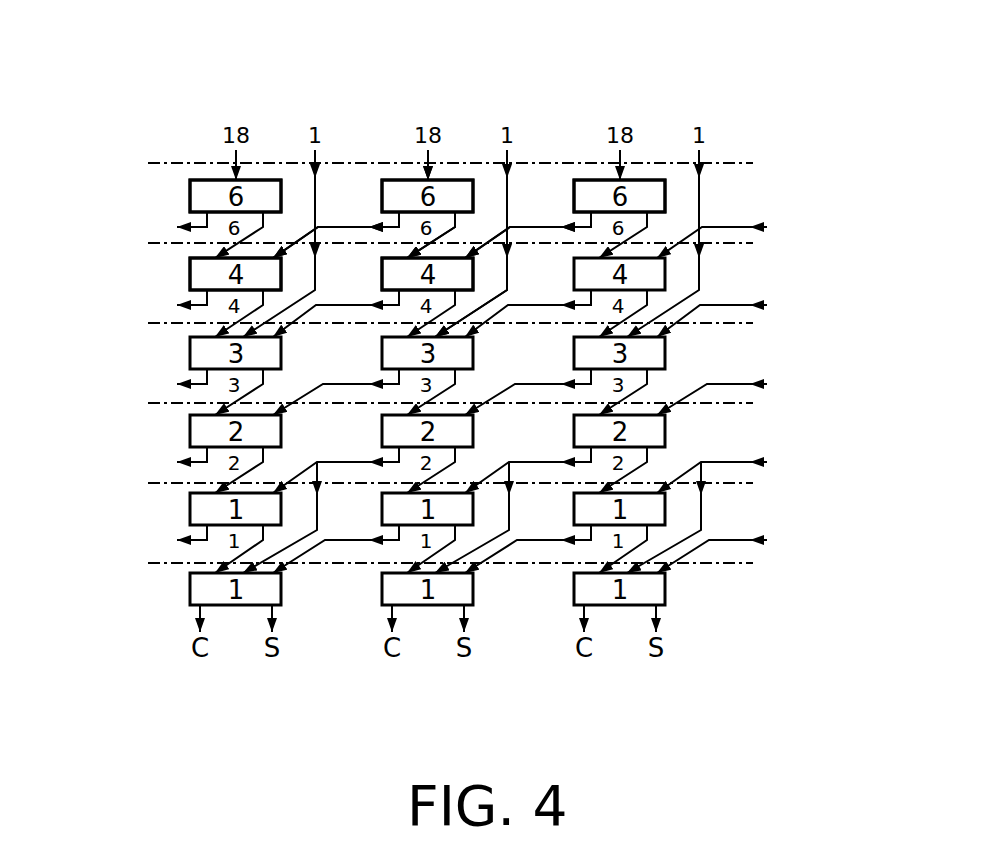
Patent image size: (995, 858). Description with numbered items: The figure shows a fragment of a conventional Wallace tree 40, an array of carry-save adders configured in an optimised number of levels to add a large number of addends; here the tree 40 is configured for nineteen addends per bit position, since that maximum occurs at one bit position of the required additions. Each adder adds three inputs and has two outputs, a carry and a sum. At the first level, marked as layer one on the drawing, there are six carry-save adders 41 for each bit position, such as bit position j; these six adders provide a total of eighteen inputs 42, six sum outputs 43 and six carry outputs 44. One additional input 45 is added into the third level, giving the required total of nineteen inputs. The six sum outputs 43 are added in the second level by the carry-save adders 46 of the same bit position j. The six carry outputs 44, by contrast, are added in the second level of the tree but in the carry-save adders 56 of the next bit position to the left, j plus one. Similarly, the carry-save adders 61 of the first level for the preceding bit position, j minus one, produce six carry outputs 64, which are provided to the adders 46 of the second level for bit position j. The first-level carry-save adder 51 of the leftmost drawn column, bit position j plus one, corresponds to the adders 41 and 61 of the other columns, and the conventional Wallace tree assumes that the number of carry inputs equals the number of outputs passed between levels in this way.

The Wallace tree 40 is at (732, 88).
The carry-save adders 41 is at (392, 180).
The inputs 42 is at (430, 166).
The sum outputs 43 is at (456, 220).
The carry outputs 44 is at (341, 227).
The additional input 45 is at (506, 273).
The carry-save adders 46 is at (382, 272).
The carry-save adder of layer 1 for bit j+1 51 is at (190, 200).
The carry-save adders 56 is at (190, 278).
The carry-save adders 61 is at (582, 180).
The carry outputs 64 is at (530, 227).